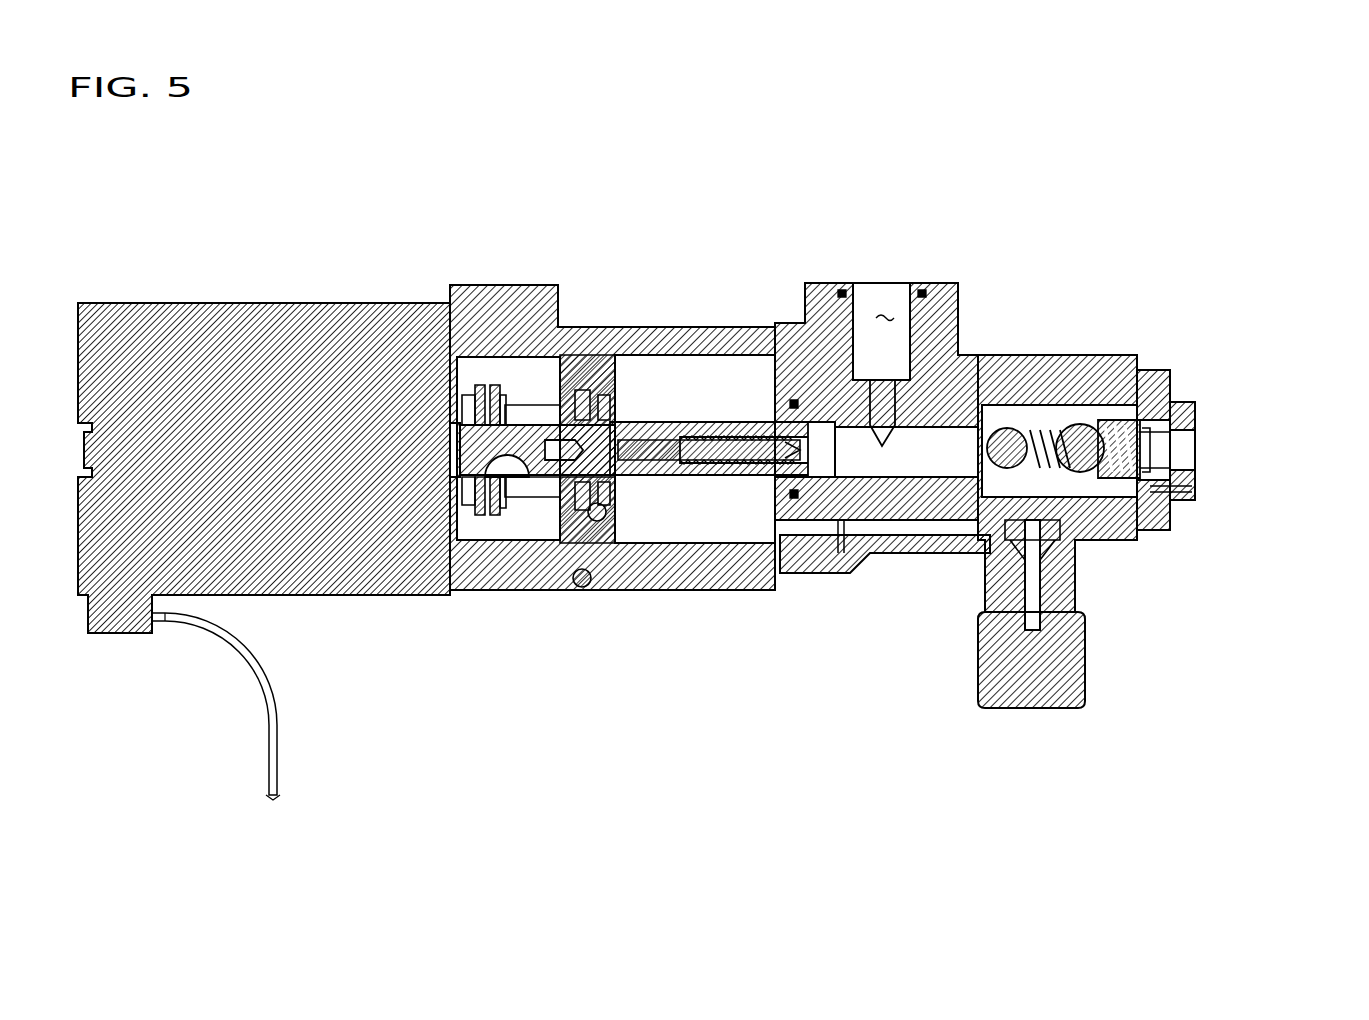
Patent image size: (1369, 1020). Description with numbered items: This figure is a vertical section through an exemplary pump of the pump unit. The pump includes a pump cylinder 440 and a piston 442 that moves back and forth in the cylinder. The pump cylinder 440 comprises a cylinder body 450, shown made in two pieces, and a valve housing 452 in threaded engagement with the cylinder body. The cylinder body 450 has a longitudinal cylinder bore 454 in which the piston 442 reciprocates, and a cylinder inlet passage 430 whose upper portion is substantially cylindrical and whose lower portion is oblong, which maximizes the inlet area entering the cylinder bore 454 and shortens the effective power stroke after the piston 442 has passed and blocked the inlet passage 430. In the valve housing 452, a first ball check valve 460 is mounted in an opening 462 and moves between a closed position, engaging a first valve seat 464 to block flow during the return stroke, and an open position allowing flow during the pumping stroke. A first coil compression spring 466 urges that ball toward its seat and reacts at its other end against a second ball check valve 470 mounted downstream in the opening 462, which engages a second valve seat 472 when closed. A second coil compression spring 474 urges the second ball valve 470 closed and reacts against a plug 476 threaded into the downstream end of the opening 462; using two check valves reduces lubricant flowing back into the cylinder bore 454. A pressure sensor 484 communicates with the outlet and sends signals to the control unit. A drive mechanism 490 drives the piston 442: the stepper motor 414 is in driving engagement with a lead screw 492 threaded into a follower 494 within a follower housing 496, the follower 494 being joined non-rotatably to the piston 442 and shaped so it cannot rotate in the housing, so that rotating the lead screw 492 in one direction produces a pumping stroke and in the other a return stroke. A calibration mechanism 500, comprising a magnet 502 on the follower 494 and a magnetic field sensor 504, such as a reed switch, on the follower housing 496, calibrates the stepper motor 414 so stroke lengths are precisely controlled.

The stepper motor 414 is at (325, 590).
The drive mechanism 490 is at (539, 386).
The follower housing 496 is at (466, 280).
The follower 494 is at (617, 366).
The calibration mechanism 500 is at (582, 598).
The magnet 502 is at (592, 512).
The magnetic field sensor 504 is at (579, 587).
The piston 442 is at (735, 488).
The lead screw 492 is at (688, 470).
The cylinder body 450 is at (960, 320).
The cylinder inlet passage 430 is at (888, 315).
The opening 462 is at (966, 440).
The cylinder bore 454 is at (866, 515).
The pump cylinder 440 is at (1137, 545).
The pressure sensor 484 is at (1085, 690).
The first valve seat 464 is at (1005, 400).
The first ball check valve 460 is at (1040, 395).
The first coil compression spring 466 is at (1082, 425).
The second valve seat 472 is at (1098, 358).
The valve housing 452 is at (1175, 393).
The second coil compression spring 474 is at (1196, 422).
The plug 476 is at (1196, 465).
The second ball check valve 470 is at (1194, 490).